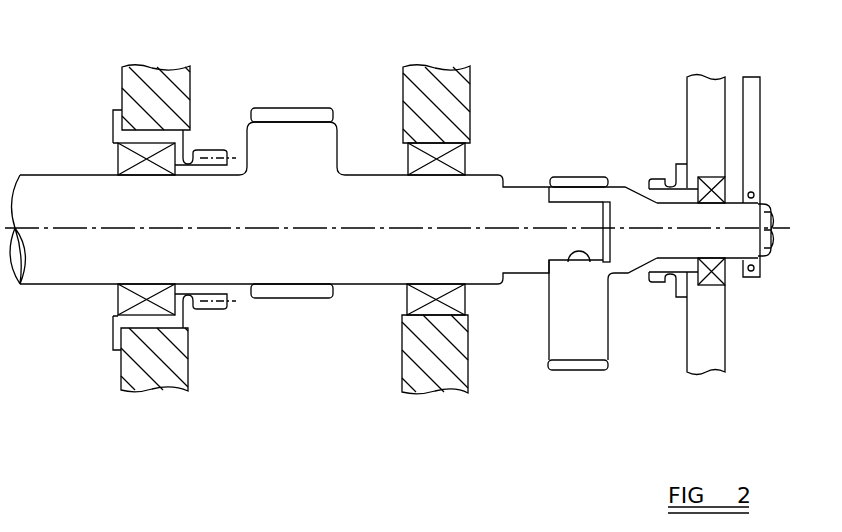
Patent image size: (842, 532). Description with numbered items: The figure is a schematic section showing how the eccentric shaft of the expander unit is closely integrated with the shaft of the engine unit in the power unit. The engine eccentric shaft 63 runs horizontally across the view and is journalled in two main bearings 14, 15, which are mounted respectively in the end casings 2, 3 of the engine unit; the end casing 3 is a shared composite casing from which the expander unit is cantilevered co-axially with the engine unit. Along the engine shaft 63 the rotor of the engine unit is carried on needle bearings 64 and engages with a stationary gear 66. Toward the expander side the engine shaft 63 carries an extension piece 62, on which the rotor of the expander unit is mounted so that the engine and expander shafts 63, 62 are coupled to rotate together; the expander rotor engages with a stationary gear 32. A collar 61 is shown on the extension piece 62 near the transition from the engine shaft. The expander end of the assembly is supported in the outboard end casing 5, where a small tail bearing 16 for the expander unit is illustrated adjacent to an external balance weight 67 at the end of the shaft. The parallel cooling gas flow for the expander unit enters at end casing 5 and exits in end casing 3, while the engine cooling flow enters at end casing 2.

The end casing 2 is at (128, 80).
The end casing 3 is at (450, 89).
The outboard end casing 5 is at (695, 110).
The main bearing 14 is at (120, 302).
The main bearing 15 is at (465, 300).
The tail bearing 16 is at (718, 264).
The stationary gear 32 is at (667, 279).
The collar 61 is at (570, 175).
The extension piece 62 is at (593, 330).
The engine eccentric shaft 63 is at (358, 270).
The needle bearings 64 is at (280, 108).
The stationary gear 66 is at (218, 305).
The external balance weight 67 is at (753, 117).